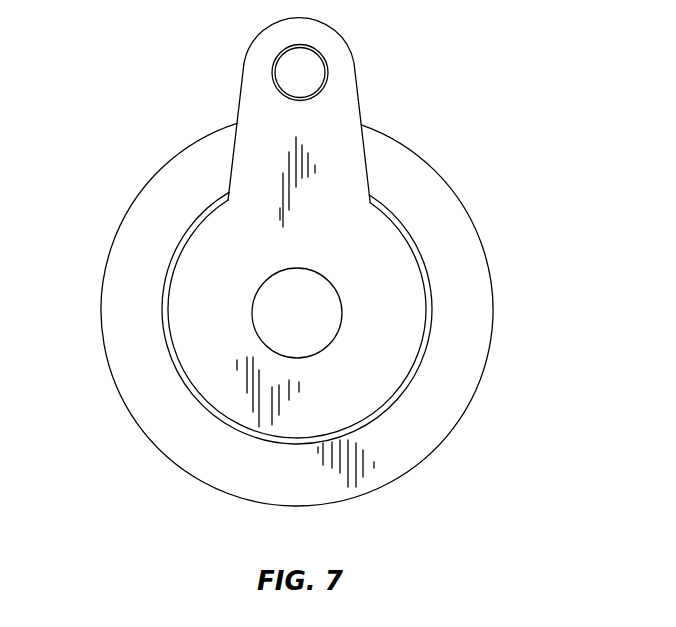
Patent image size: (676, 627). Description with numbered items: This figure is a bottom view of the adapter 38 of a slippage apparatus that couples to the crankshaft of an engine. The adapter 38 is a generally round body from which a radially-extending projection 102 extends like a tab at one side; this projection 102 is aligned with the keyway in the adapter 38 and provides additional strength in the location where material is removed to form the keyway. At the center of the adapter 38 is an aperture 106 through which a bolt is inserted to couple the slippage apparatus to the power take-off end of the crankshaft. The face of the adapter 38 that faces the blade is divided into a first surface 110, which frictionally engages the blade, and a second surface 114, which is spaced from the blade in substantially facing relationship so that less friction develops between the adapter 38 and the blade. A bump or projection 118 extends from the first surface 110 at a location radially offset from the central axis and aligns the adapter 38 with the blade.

The adapter 38 is at (477, 152).
The radially-extending projection 102 is at (260, 52).
The aperture 106 is at (268, 340).
The first surface 110 is at (399, 285).
The second surface 114 is at (473, 366).
The projection 118 is at (307, 70).